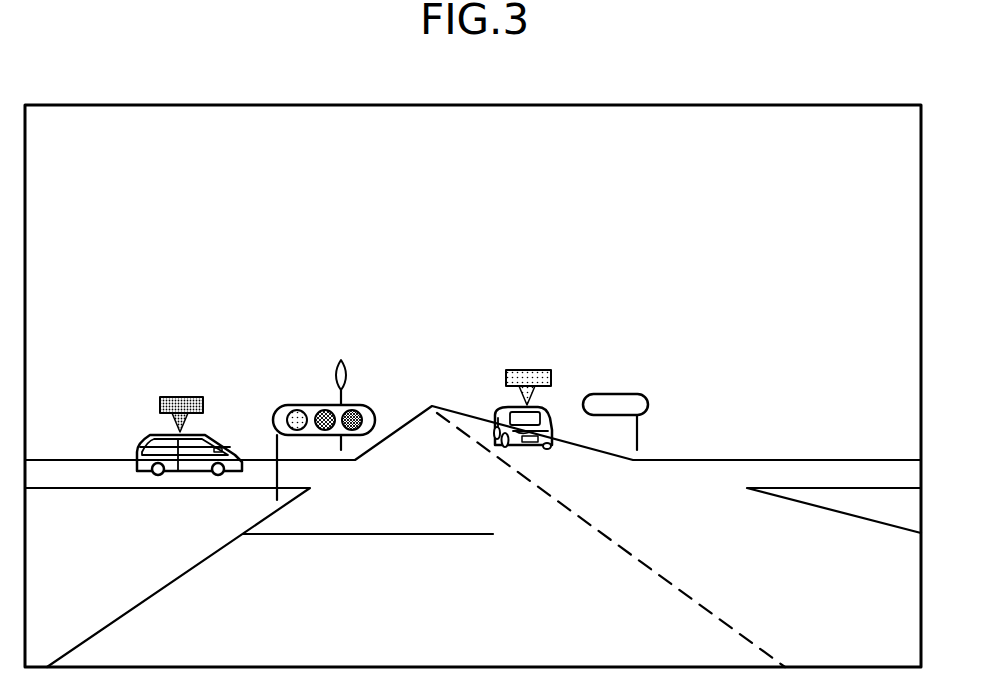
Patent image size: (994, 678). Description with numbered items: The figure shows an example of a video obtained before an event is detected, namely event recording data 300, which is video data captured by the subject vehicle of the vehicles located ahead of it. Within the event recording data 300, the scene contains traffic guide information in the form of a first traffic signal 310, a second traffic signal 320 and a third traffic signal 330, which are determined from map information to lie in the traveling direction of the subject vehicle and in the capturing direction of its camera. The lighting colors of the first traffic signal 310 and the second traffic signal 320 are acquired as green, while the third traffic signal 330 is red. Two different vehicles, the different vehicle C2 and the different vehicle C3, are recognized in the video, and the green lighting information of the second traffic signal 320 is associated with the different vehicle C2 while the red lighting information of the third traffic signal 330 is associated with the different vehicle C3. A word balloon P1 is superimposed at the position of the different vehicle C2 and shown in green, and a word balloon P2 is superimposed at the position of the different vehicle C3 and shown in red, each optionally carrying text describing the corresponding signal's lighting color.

The event recording data 300 is at (780, 105).
The first traffic signal 310 is at (300, 404).
The second traffic signal 320 is at (612, 394).
The third traffic signal 330 is at (341, 360).
The different vehicle C2 is at (547, 447).
The different vehicle C3 is at (150, 437).
The word balloon P1 is at (524, 370).
The word balloon P2 is at (178, 397).